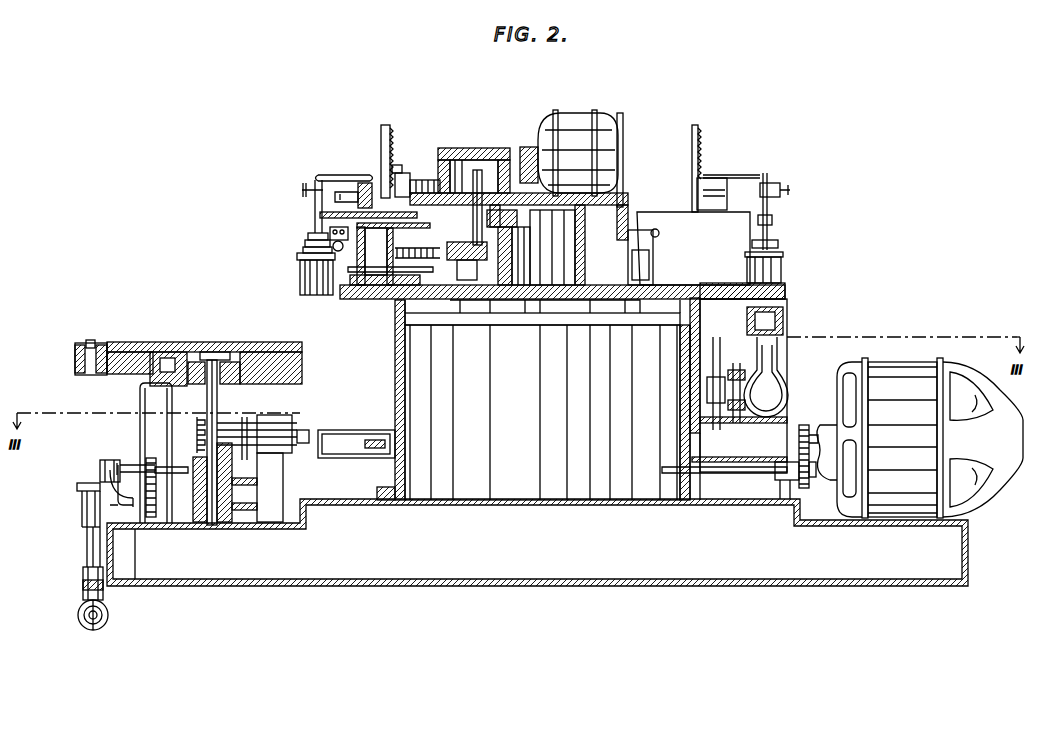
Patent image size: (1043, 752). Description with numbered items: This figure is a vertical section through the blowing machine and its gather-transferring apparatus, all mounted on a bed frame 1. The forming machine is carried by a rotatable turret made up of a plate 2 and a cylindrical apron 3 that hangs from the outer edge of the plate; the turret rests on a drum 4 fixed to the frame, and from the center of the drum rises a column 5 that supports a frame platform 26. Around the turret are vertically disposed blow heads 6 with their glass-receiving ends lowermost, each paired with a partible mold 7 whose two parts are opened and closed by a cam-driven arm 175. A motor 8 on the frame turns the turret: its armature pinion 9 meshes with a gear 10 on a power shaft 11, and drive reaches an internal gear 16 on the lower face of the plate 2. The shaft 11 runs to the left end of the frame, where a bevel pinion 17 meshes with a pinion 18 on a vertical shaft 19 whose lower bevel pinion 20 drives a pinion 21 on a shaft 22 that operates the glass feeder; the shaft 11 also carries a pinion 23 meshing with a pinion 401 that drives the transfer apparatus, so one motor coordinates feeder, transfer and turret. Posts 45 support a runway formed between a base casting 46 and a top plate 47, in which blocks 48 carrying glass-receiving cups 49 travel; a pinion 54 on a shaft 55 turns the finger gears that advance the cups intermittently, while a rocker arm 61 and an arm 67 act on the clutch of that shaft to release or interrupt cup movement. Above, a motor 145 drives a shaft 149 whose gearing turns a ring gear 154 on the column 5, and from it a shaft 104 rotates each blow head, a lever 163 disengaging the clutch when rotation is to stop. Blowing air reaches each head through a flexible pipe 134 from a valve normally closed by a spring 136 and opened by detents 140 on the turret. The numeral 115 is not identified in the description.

The bed frame 1 is at (570, 506).
The plate 2 is at (760, 292).
The cylindrical apron 3 is at (697, 347).
The drum 4 is at (400, 377).
The column 5 is at (577, 267).
The blow head 6 is at (780, 270).
The partible mold 7 is at (780, 360).
The motor 8 is at (913, 366).
The pinion 9 is at (804, 425).
The gear 10 is at (808, 484).
The shaft 11 is at (175, 466).
The internal gear 16 is at (302, 270).
The bevel pinion 17 is at (103, 457).
The bevel pinion 18 is at (77, 485).
The shaft 19 is at (88, 543).
The bevel pinion 20 is at (83, 599).
The bevel pinion 21 is at (78, 622).
The shaft 22 is at (95, 622).
The pinion 23 is at (147, 446).
The frame platform 26 is at (632, 200).
The post 45 is at (140, 402).
The base casting 46 is at (180, 387).
The top plate 47 is at (168, 342).
The block 48 is at (120, 342).
The glass-receiving cup 49 is at (83, 343).
The pinion 54 is at (200, 360).
The shaft 55 is at (213, 527).
The rocker arm 61 is at (272, 443).
The arm 67 is at (277, 420).
The shaft 104 is at (375, 272).
The valve stem 115 is at (315, 225).
The flexible pipe 134 is at (338, 175).
The spring 136 is at (388, 128).
The detent 140 is at (398, 173).
The motor 145 is at (575, 113).
The shaft 149 is at (468, 148).
The ring gear 154 is at (490, 238).
The lever 163 is at (643, 267).
The arm 175 is at (395, 445).
The pinion 401 is at (152, 518).